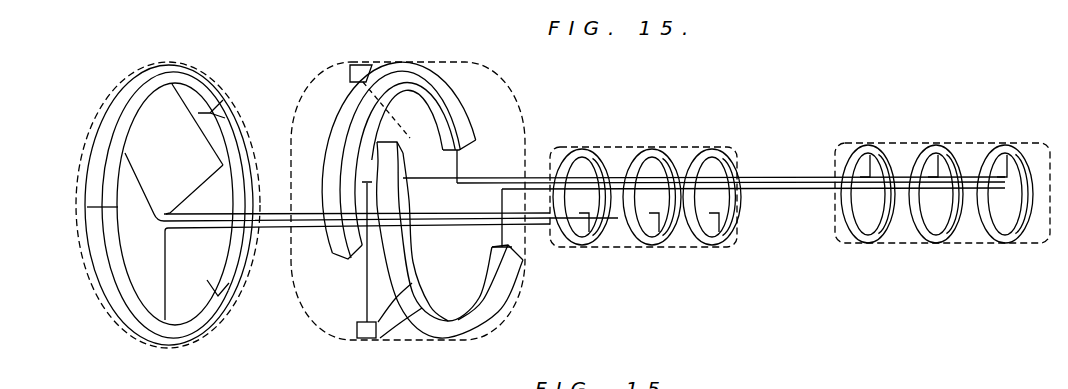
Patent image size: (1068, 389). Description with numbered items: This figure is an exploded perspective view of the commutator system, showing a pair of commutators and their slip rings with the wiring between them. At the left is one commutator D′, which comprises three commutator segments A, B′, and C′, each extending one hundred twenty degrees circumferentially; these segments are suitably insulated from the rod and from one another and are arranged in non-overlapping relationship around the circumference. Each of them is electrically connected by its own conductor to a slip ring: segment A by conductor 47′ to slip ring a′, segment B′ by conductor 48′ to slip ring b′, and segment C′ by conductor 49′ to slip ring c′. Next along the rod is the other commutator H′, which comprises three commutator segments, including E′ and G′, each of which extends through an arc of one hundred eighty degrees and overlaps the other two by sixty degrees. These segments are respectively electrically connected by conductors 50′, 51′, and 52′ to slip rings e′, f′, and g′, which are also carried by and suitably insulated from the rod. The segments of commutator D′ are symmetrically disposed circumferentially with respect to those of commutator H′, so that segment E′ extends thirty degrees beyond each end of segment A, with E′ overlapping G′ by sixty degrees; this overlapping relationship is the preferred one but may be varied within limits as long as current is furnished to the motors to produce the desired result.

The commutator D′ is at (100, 86).
The commutator segment A is at (223, 118).
The commutator segment B′ is at (102, 145).
The commutator segment C′ is at (107, 280).
The conductor 47′ is at (258, 218).
The conductor 48′ is at (272, 228).
The conductor 49′ is at (306, 228).
The commutator segment E′ is at (363, 64).
The commutator H′ is at (418, 53).
The commutator segment G′ is at (392, 278).
The slip ring a′ is at (577, 152).
The slip ring b′ is at (648, 152).
The slip ring c′ is at (705, 150).
The conductor 50′ is at (755, 183).
The conductor 51′ is at (793, 182).
The conductor 52′ is at (827, 183).
The slip ring e′ is at (870, 146).
The slip ring f′ is at (935, 146).
The slip ring g′ is at (1003, 147).